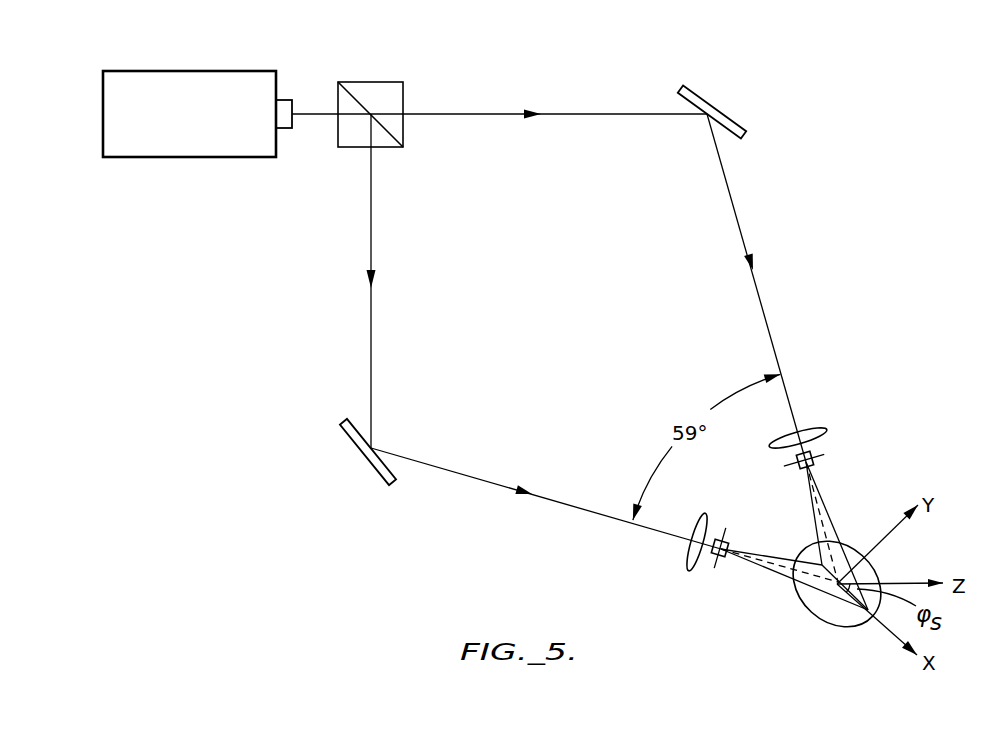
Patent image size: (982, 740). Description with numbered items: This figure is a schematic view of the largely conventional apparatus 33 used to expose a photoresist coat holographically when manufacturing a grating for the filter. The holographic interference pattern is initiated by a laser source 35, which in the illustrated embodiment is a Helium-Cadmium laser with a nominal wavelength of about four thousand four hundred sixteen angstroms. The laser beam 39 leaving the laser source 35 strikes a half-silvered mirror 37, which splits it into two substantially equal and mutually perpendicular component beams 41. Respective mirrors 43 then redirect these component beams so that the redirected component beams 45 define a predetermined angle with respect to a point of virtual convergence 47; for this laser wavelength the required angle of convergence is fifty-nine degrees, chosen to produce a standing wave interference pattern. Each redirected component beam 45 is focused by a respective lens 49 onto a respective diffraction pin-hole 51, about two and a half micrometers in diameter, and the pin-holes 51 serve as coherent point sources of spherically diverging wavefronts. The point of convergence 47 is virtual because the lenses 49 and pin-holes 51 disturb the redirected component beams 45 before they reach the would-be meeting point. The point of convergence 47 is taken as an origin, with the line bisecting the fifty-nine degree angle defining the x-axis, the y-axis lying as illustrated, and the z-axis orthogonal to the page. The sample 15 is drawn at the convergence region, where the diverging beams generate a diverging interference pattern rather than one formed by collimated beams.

The sample 15 is at (847, 627).
The apparatus 33 is at (838, 202).
The laser source 35 is at (239, 71).
The half-silvered mirror 37 is at (353, 93).
The laser beam 39 is at (303, 112).
The component beams 41 is at (447, 112).
The mirrors 43 is at (733, 120).
The redirected component beams 45 is at (740, 217).
The point of virtual convergence 47 is at (813, 607).
The lenses 49 is at (817, 428).
The diffraction pin-holes 51 is at (813, 468).